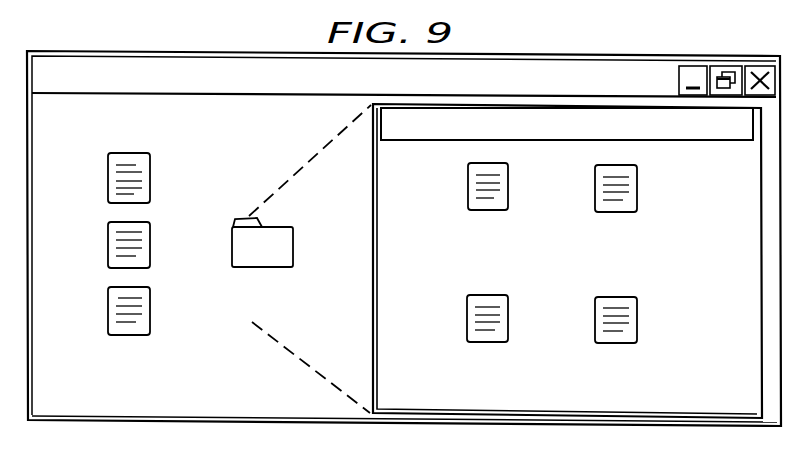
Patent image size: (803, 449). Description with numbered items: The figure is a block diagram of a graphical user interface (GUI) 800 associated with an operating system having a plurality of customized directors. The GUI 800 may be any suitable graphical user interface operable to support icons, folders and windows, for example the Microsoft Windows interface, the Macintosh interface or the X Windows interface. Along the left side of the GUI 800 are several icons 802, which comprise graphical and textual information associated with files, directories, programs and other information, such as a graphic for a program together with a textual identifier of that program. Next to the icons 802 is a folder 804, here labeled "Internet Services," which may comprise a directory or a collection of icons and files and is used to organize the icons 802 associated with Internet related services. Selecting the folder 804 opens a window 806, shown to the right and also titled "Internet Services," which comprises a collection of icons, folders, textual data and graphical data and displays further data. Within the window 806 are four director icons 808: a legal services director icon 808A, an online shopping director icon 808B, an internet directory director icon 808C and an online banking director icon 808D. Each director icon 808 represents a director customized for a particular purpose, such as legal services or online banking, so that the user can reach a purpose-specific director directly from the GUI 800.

The graphical user interface 800 is at (190, 52).
The icons 802 is at (102, 153).
The folder 804 is at (232, 248).
The window 806 is at (373, 266).
The director icons 808 is at (571, 276).
The legal services director icon 808A is at (468, 188).
The online shopping director icon 808B is at (595, 190).
The internet directory director icon 808C is at (467, 318).
The online banking director icon 808D is at (595, 318).